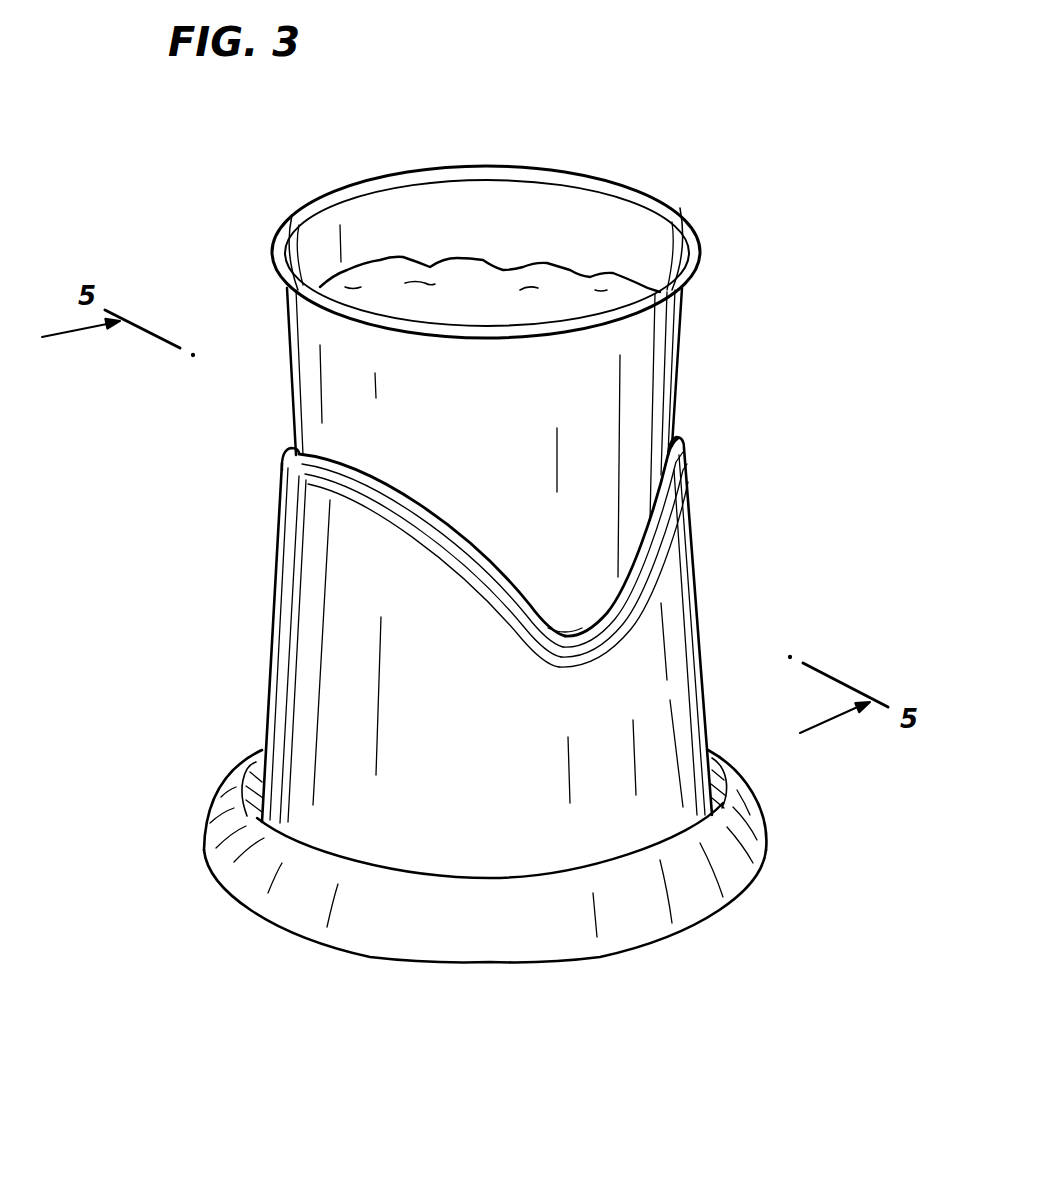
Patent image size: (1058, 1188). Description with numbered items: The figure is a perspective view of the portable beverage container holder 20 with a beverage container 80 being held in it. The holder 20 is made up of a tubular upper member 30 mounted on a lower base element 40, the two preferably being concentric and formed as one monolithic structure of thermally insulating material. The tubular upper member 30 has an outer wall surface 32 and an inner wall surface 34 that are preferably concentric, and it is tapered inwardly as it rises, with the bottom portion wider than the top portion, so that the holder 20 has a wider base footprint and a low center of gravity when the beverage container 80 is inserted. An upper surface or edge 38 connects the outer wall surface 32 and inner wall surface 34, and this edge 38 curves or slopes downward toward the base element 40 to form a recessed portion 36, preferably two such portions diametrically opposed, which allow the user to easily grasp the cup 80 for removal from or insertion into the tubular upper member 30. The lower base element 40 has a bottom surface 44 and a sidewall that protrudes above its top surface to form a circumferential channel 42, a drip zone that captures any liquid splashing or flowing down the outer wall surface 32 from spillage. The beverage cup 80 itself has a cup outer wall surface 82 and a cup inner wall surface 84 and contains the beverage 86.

The beverage container holder 20 is at (212, 668).
The tubular upper member 30 is at (702, 582).
The outer wall surface 32 is at (310, 537).
The inner wall surface 34 is at (630, 545).
The recessed portion 36 is at (578, 636).
The upper surface or edge 38 is at (330, 455).
The lower base element 40 is at (282, 928).
The circumferential channel 42 is at (253, 775).
The bottom surface 44 is at (647, 934).
The beverage container 80 is at (640, 178).
The cup outer wall surface 82 is at (680, 356).
The cup inner wall surface 84 is at (324, 220).
The beverage 86 is at (505, 287).